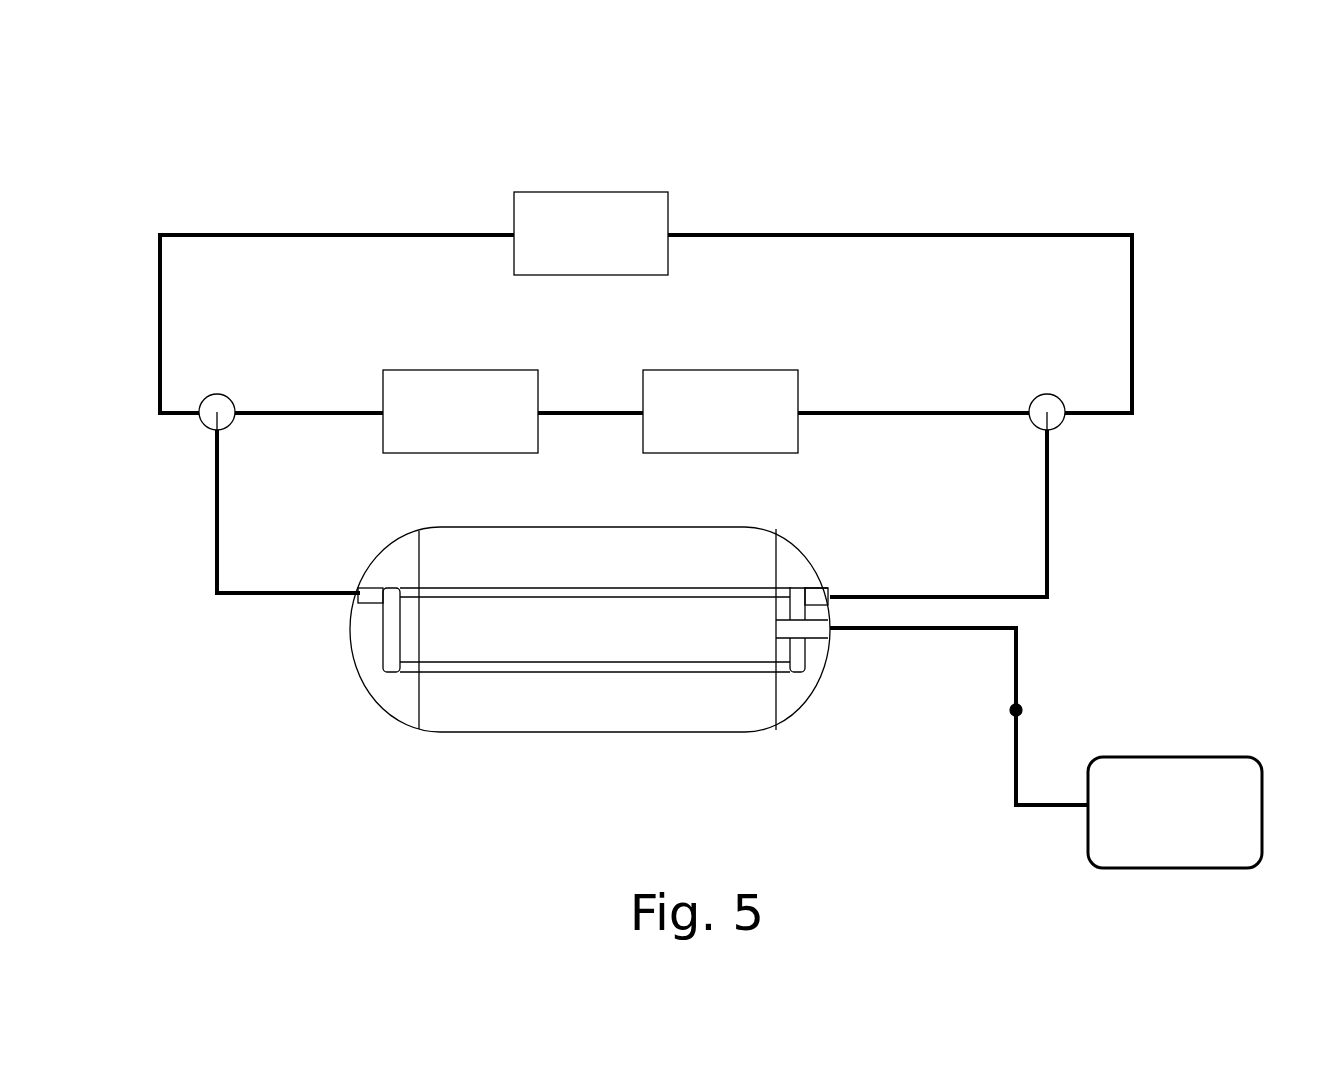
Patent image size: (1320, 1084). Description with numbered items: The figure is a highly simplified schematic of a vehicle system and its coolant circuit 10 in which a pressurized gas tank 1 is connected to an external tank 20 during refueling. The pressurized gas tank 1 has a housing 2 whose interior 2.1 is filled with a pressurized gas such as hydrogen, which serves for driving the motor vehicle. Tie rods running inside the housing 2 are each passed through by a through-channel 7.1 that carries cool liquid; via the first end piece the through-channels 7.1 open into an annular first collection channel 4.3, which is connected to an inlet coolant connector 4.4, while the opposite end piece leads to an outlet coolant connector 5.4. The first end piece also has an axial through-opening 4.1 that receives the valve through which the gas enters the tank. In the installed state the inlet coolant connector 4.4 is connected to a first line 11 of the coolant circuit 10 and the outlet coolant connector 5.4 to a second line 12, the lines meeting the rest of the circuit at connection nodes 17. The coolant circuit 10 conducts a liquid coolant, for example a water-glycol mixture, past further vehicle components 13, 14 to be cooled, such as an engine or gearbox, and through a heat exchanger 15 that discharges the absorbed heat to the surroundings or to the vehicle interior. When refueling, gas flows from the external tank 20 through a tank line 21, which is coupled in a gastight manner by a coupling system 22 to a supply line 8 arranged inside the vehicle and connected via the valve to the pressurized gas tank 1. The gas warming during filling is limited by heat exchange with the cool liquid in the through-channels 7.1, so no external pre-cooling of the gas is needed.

The coolant circuit 10 is at (1112, 122).
The heat exchanger 15 is at (591, 233).
The vehicle component 14 is at (460, 411).
The vehicle component 13 is at (720, 411).
The connection node 17 is at (218, 394).
The second line 12 is at (212, 525).
The first line 11 is at (1052, 520).
The pressurized gas tank 1 is at (627, 655).
The housing 2 is at (800, 705).
The interior 2.1 is at (614, 611).
The through-channel 7.1 is at (498, 587).
The outlet coolant connector 5.4 is at (372, 588).
The first collection channel 4.3 is at (383, 640).
The inlet coolant connector 4.4 is at (815, 590).
The through-opening 4.1 is at (827, 602).
The supply line 8 is at (1018, 650).
The coupling system 22 is at (1013, 707).
The tank line 21 is at (1032, 800).
The external tank 20 is at (1175, 812).